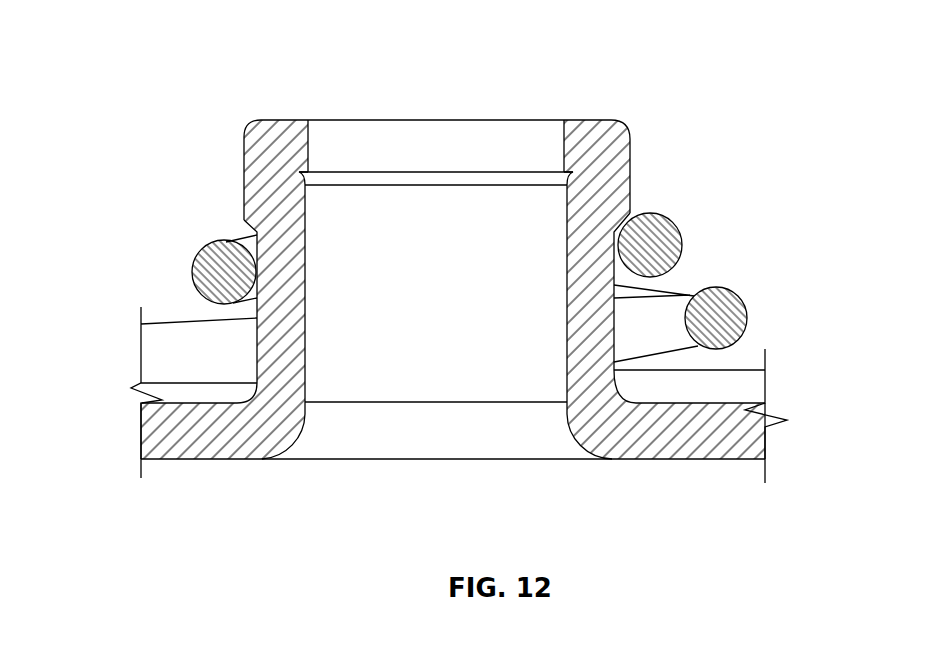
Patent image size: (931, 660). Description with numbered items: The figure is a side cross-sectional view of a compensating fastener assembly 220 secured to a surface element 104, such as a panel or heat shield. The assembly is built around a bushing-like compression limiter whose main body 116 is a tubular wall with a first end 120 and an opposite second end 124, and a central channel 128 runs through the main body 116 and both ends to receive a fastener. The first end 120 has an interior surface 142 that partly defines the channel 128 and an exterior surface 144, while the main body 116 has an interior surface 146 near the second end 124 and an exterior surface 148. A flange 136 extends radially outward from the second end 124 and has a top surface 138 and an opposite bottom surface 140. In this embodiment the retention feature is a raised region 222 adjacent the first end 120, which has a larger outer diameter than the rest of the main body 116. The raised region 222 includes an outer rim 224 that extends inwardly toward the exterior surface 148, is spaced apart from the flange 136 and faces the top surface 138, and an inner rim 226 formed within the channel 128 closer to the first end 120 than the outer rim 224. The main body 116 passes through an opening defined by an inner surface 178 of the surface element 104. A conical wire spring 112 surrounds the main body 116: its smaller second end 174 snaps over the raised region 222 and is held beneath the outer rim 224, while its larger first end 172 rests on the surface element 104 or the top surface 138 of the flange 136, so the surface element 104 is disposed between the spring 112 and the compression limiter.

The compensating fastener assembly 220 is at (224, 96).
The raised region 222 is at (262, 164).
The outer rim 224 is at (246, 228).
The main body 116 is at (268, 330).
The first end of the spring 172 is at (207, 383).
The exterior surface 148 is at (258, 343).
The second end 124 is at (278, 403).
The interior surface 146 is at (418, 370).
The central channel 128 is at (428, 99).
The interior surface 142 is at (452, 130).
The inner rim 226 is at (474, 180).
The first end 120 is at (591, 120).
The exterior surface 144 is at (633, 145).
The second end of the spring 174 is at (665, 237).
The spring 112 is at (735, 320).
The surface element 104 is at (763, 385).
The top surface 138 is at (653, 403).
The bottom surface 140 is at (603, 427).
The inner surface 178 is at (678, 390).
The flange 136 is at (732, 438).